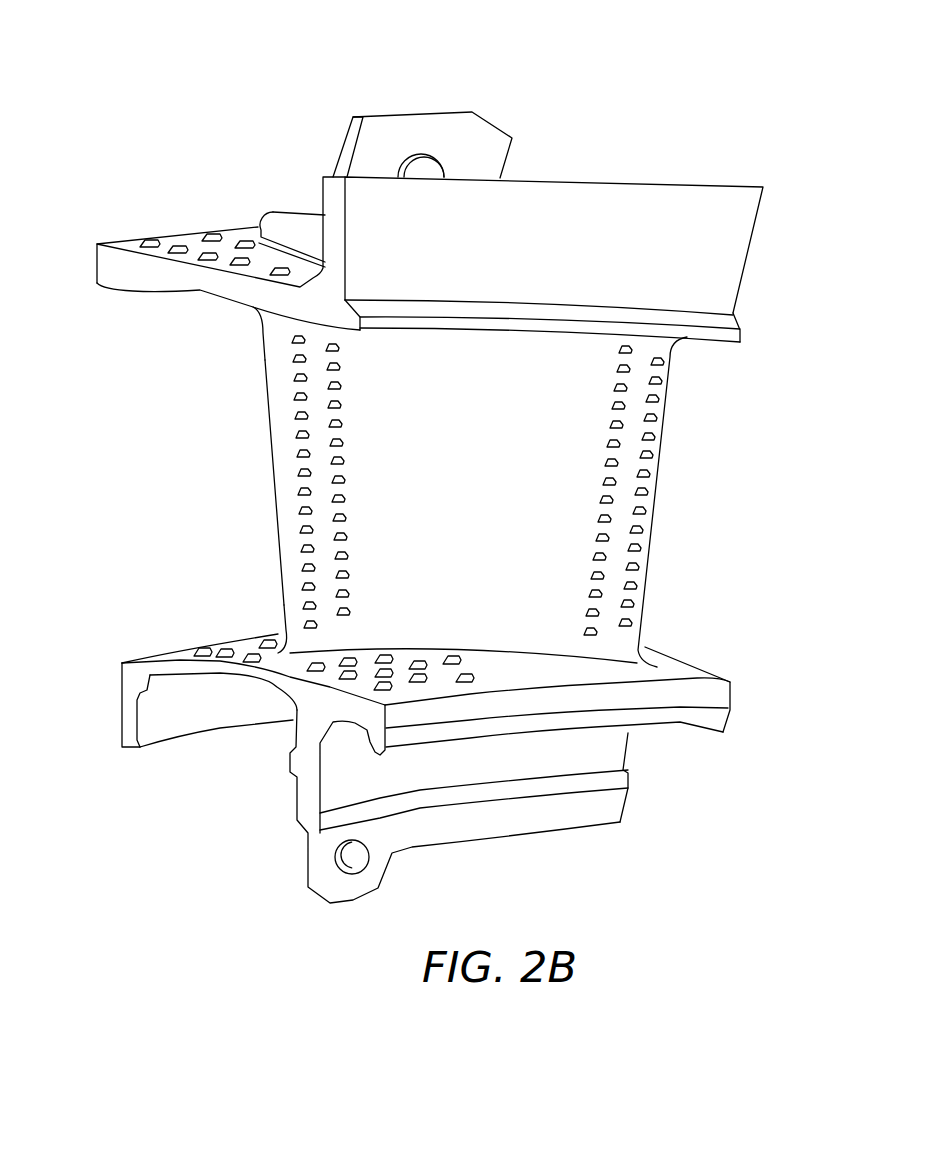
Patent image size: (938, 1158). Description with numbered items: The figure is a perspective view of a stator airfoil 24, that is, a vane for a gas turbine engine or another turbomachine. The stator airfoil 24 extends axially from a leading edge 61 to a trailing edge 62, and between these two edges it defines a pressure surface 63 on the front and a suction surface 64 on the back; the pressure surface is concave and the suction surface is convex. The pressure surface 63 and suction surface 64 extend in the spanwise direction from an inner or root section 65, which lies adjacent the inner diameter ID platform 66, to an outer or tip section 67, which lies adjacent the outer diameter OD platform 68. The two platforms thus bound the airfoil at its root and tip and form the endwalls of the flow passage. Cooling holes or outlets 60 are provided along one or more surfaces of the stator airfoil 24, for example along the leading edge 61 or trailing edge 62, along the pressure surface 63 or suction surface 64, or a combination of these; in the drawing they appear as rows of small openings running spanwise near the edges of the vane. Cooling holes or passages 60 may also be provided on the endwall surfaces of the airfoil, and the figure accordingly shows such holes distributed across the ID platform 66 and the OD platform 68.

The stator airfoil 24 is at (125, 100).
The cooling holes 60 is at (213, 233).
The leading edge 61 is at (263, 372).
The trailing edge 62 is at (650, 543).
The pressure surface 63 is at (390, 492).
The suction surface 64 is at (661, 482).
The inner section 65 is at (297, 633).
The ID platform 66 is at (718, 690).
The outer section 67 is at (275, 333).
The OD platform 68 is at (110, 273).